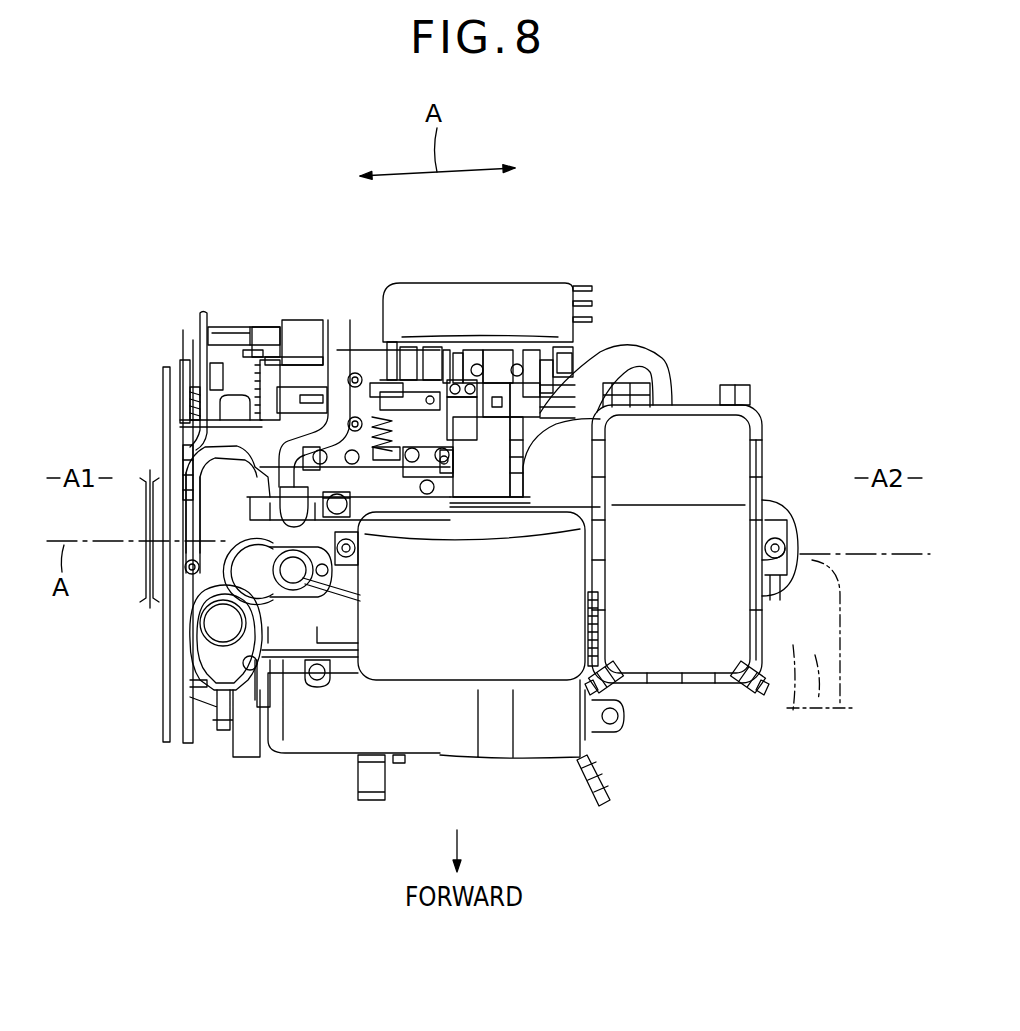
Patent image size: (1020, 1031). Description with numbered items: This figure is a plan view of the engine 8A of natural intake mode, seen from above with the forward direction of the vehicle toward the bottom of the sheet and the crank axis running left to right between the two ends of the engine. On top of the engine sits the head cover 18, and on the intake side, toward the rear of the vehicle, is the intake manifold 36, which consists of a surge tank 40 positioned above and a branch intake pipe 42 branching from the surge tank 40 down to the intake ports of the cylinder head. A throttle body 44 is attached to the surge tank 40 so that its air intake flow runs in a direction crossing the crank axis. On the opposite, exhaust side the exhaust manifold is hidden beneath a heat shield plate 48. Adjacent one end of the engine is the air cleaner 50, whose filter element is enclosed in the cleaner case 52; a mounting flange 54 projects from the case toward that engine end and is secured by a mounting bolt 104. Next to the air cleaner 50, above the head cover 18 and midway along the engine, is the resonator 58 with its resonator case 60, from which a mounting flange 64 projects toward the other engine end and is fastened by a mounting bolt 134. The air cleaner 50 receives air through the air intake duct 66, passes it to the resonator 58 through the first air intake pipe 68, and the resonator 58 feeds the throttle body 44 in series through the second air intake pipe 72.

The engine of natural intake mode 8A is at (637, 192).
The head cover 18 is at (213, 551).
The intake manifold 36 is at (357, 328).
The surge tank 40 is at (470, 292).
The branch intake pipe 42 is at (330, 326).
The throttle body 44 is at (516, 332).
The heat shield plate 48 is at (330, 742).
The air cleaner 50 is at (771, 386).
The cleaner case 52 is at (738, 466).
The mounting flange 54 is at (766, 503).
The resonator 58 is at (542, 701).
The resonator case 60 is at (462, 660).
The mounting flange 64 is at (335, 578).
The air intake duct 66 is at (822, 710).
The first air intake pipe 68 is at (573, 440).
The second air intake pipe 72 is at (500, 447).
The mounting bolt 104 is at (777, 548).
The mounting bolt 134 is at (335, 545).